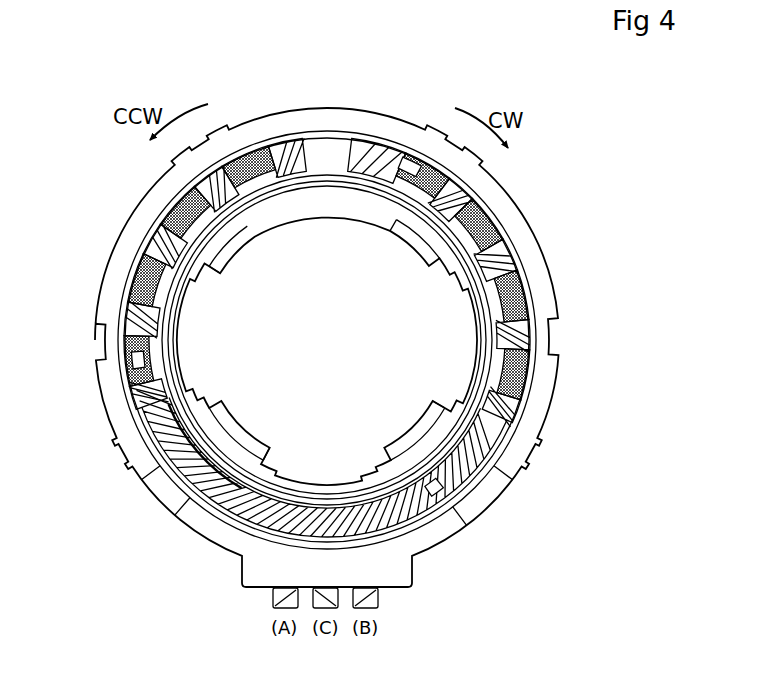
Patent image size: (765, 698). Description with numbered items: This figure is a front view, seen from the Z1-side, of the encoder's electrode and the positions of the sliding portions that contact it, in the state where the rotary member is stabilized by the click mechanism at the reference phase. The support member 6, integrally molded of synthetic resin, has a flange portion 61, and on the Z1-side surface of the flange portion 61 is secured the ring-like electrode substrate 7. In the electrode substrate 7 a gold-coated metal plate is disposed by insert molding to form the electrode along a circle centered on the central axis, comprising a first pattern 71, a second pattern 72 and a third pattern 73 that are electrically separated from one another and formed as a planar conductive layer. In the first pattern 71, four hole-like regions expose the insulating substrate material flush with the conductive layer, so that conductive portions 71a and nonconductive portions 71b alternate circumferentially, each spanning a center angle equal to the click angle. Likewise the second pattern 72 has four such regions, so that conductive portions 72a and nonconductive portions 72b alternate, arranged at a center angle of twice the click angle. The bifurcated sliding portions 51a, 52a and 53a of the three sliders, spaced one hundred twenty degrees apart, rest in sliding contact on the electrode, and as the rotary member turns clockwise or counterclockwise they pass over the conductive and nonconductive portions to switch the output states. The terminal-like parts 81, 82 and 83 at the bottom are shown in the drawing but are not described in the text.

The support member 6 is at (97, 205).
The electrode substrate 7 is at (346, 150).
The flange portion 61 is at (550, 236).
The first pattern 71 is at (227, 232).
The conductive portions 71a is at (294, 176).
The nonconductive portions 71b is at (258, 190).
The second pattern 72 is at (496, 290).
The conductive portions 72a is at (514, 342).
The nonconductive portions 72b is at (427, 206).
The third pattern 73 is at (318, 486).
The sliding portion 51a is at (410, 162).
The sliding portion 52a is at (452, 481).
The sliding portion 53a is at (132, 377).
The terminal A 81 is at (283, 598).
The terminal B 82 is at (368, 598).
The terminal block 83 is at (322, 588).